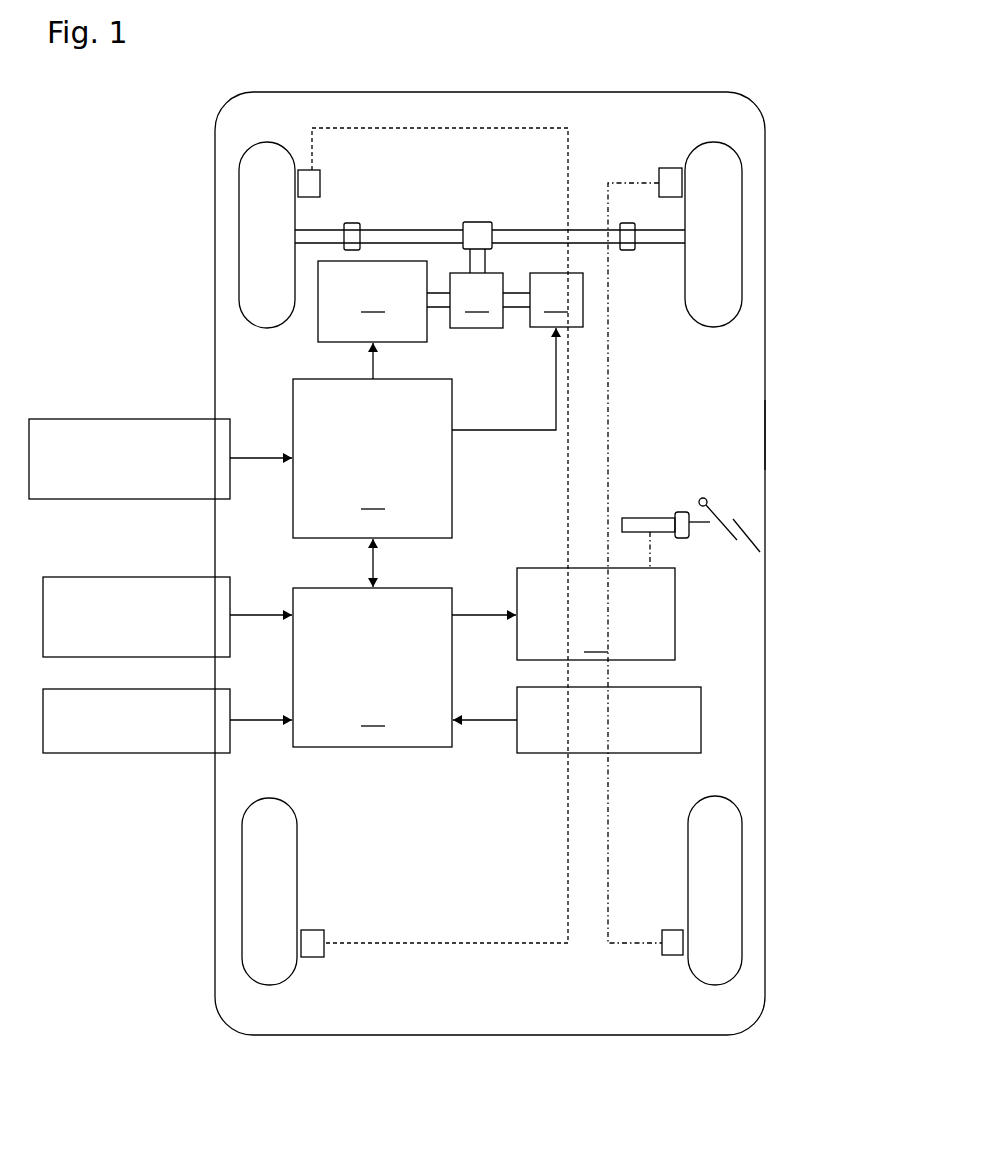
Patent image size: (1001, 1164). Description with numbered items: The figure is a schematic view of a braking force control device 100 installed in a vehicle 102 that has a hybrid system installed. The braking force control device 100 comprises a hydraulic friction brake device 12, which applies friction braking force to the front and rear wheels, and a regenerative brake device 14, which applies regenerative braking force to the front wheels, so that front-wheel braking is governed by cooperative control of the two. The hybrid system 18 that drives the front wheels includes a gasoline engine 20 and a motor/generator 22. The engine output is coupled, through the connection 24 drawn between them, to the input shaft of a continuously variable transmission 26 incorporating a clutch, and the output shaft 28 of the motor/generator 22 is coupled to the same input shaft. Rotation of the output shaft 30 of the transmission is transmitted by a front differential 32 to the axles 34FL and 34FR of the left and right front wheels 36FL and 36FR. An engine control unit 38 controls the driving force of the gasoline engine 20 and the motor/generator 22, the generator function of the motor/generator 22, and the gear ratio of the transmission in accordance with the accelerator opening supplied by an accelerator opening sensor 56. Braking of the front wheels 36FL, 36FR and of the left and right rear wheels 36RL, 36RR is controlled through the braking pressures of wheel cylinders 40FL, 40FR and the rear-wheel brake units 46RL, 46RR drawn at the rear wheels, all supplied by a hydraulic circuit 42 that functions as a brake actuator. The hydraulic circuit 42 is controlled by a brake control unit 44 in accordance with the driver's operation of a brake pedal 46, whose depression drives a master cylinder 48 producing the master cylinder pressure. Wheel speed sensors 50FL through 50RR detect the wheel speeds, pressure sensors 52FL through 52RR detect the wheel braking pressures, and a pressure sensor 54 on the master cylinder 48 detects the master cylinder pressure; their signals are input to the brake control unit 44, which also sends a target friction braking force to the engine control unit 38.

The braking force control device 100 is at (609, 113).
The vehicle 102 is at (766, 443).
The hydraulic friction brake device 12 is at (681, 641).
The regenerative brake device 14 is at (584, 336).
The hybrid system 18 is at (485, 348).
The gasoline engine 20 is at (372, 301).
The motor/generator 22 is at (556, 300).
The connecting shaft 24 is at (440, 310).
The continuously variable transmission 26 is at (476, 300).
The output shaft of the motor/generator 28 is at (518, 310).
The output shaft of the continuously variable transmission 30 is at (486, 258).
The front differential 32 is at (479, 222).
The axle of the left front wheel 34FL is at (394, 230).
The axle of the right front wheel 34FR is at (594, 244).
The left front wheel 36FL is at (239, 207).
The right front wheel 36FR is at (742, 245).
The left rear wheel 36RL is at (242, 897).
The right rear wheel 36RR is at (742, 896).
The engine control unit 38 is at (424, 457).
The wheel cylinder 40FL is at (308, 188).
The wheel cylinder 40FR is at (669, 178).
The hydraulic circuit 42 is at (596, 614).
The brake control unit 44 is at (404, 667).
The brake pedal 46 is at (746, 531).
The rear left wheel brake unit 46RL is at (315, 932).
The rear right wheel brake unit 46RR is at (672, 930).
The master cylinder 48 is at (650, 517).
The wheel speed sensor 50FL is at (120, 577).
The wheel speed sensor 50RR is at (167, 593).
The pressure sensor 52FL is at (120, 754).
The pressure sensor 52RR is at (167, 748).
The pressure sensor 54 is at (632, 754).
The accelerator opening sensor 56 is at (137, 419).